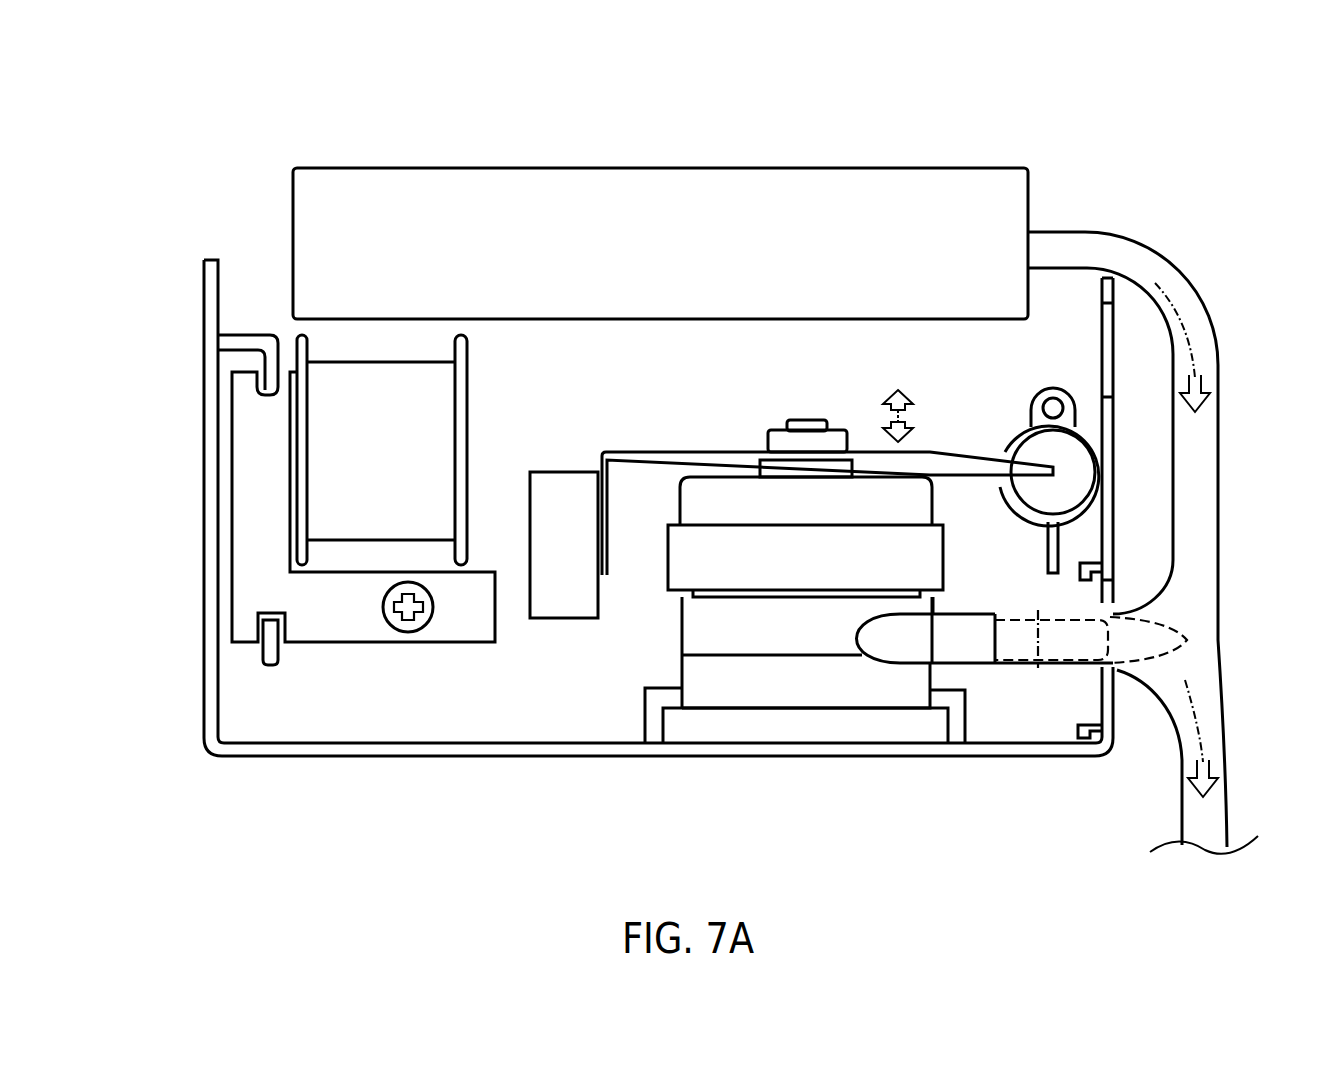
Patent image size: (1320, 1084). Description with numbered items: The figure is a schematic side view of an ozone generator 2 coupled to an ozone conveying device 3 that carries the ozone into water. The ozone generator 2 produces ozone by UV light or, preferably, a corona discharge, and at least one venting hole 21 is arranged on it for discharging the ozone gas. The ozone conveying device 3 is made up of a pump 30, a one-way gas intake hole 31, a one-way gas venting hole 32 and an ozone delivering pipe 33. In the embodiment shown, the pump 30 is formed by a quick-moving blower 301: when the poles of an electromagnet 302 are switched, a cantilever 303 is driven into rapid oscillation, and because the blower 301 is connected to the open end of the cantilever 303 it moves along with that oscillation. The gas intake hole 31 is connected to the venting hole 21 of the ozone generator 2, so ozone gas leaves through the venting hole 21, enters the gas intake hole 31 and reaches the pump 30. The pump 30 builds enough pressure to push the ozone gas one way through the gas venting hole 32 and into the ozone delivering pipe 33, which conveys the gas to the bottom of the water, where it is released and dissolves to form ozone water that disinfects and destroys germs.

The ozone generator 2 is at (661, 167).
The venting hole 21 is at (1123, 264).
The ozone conveying device 3 is at (206, 544).
The pump 30 is at (635, 633).
The quick-moving blower 301 is at (813, 560).
The electromagnet 302 is at (340, 452).
The cantilever 303 is at (645, 457).
The one-way gas intake hole 31 is at (975, 640).
The one-way gas venting hole 32 is at (1075, 640).
The ozone delivering pipe 33 is at (1203, 682).